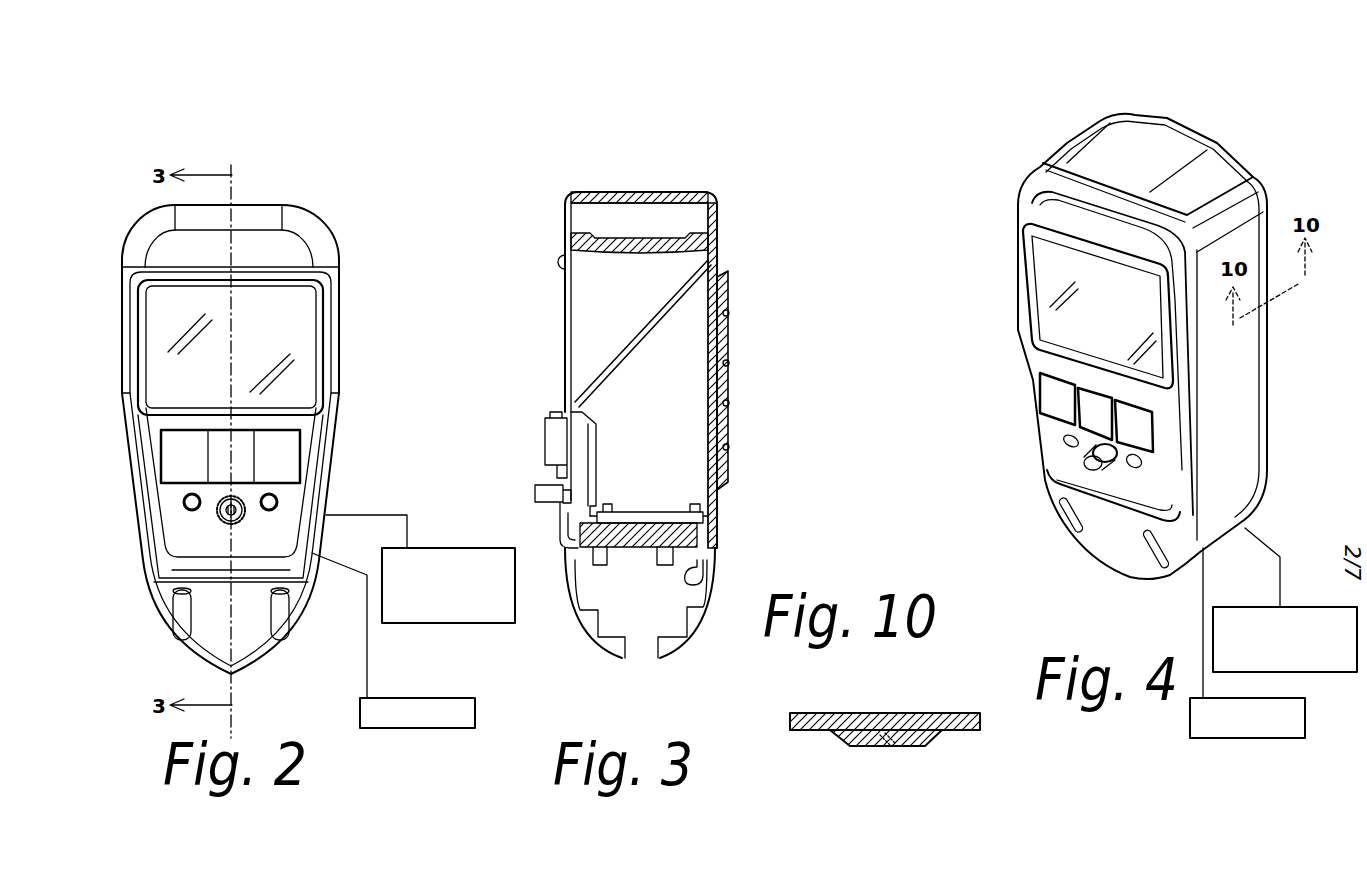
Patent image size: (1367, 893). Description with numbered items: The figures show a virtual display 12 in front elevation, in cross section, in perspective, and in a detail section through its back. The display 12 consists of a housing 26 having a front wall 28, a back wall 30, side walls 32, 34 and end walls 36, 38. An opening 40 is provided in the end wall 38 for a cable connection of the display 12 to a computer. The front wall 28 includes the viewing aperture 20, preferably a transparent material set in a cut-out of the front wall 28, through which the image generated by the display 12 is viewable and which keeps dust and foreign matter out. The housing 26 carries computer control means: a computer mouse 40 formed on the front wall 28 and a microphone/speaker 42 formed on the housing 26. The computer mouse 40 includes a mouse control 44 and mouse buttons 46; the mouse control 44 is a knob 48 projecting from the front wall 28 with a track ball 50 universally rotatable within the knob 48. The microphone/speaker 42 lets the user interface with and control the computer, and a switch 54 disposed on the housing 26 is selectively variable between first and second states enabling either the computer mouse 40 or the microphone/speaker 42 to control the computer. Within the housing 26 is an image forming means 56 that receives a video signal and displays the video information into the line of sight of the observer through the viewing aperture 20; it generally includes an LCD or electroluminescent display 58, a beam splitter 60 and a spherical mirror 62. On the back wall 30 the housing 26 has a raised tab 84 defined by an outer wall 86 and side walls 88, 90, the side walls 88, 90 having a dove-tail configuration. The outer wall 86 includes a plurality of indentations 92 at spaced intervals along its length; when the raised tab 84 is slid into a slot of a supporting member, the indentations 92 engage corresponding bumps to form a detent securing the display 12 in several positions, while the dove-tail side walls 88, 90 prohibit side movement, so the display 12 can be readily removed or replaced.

In FIG. 2, the virtual display 12 is at (338, 194).
In FIG. 3, the virtual display 12 is at (726, 177).
In FIG. 4, the virtual display 12 is at (1181, 98).
In FIG. 2, the viewing aperture 20 is at (280, 328).
In FIG. 3, the viewing aperture 20 is at (557, 266).
In FIG. 4, the viewing aperture 20 is at (1098, 306).
In FIG. 2, the housing 26 is at (278, 192).
In FIG. 3, the housing 26 is at (735, 203).
In FIG. 4, the housing 26 is at (1214, 132).
In FIG. 3, the front wall 28 is at (566, 232).
In FIG. 4, the front wall 28 is at (1033, 452).
In FIG. 3, the back wall 30 is at (720, 493).
In FIG. 10, the back wall 30 is at (945, 712).
In FIG. 4, the back wall 30 is at (1280, 428).
In FIG. 2, the side wall 32 is at (334, 438).
In FIG. 4, the side wall 32 is at (1240, 458).
In FIG. 2, the side wall 34 is at (128, 458).
In FIG. 4, the side wall 34 is at (1010, 183).
In FIG. 2, the end wall 36 is at (249, 205).
In FIG. 3, the end wall 36 is at (615, 192).
In FIG. 4, the end wall 36 is at (1136, 148).
In FIG. 2, the end wall 38 is at (280, 660).
In FIG. 3, the end wall 38 is at (678, 653).
In FIG. 4, the end wall 38 is at (1150, 583).
In FIG. 2, the computer mouse 40 is at (199, 524).
In FIG. 3, the computer mouse 40 is at (540, 462).
In FIG. 4, the computer mouse 40 is at (1062, 478).
In FIG. 2, the microphone/speaker 42 is at (453, 623).
In FIG. 4, the microphone/speaker 42 is at (1327, 675).
In FIG. 2, the mouse control 44 is at (254, 524).
In FIG. 3, the mouse control 44 is at (512, 505).
In FIG. 4, the mouse control 44 is at (1097, 495).
In FIG. 2, the mouse buttons 46 is at (240, 448).
In FIG. 3, the mouse buttons 46 is at (556, 440).
In FIG. 4, the mouse buttons 46 is at (1090, 408).
In FIG. 2, the knob 48 is at (229, 512).
In FIG. 3, the knob 48 is at (548, 497).
In FIG. 4, the knob 48 is at (1117, 458).
In FIG. 2, the track ball 50 is at (274, 505).
In FIG. 4, the track ball 50 is at (1130, 466).
In FIG. 2, the switch 54 is at (455, 728).
In FIG. 4, the switch 54 is at (1262, 738).
In FIG. 3, the image forming means 56 is at (660, 212).
In FIG. 3, the LCD or electroluminescent display 58 is at (652, 507).
In FIG. 3, the beam splitter 60 is at (673, 302).
In FIG. 3, the spherical mirror 62 is at (700, 250).
In FIG. 3, the raised tab 84 is at (722, 345).
In FIG. 10, the raised tab 84 is at (855, 746).
In FIG. 3, the outer wall 86 is at (730, 385).
In FIG. 10, the outer wall 86 is at (930, 746).
In FIG. 10, the side wall 88 is at (953, 736).
In FIG. 10, the side wall 90 is at (833, 737).
In FIG. 3, the indentations 92 is at (732, 312).
In FIG. 10, the indentations 92 is at (893, 718).